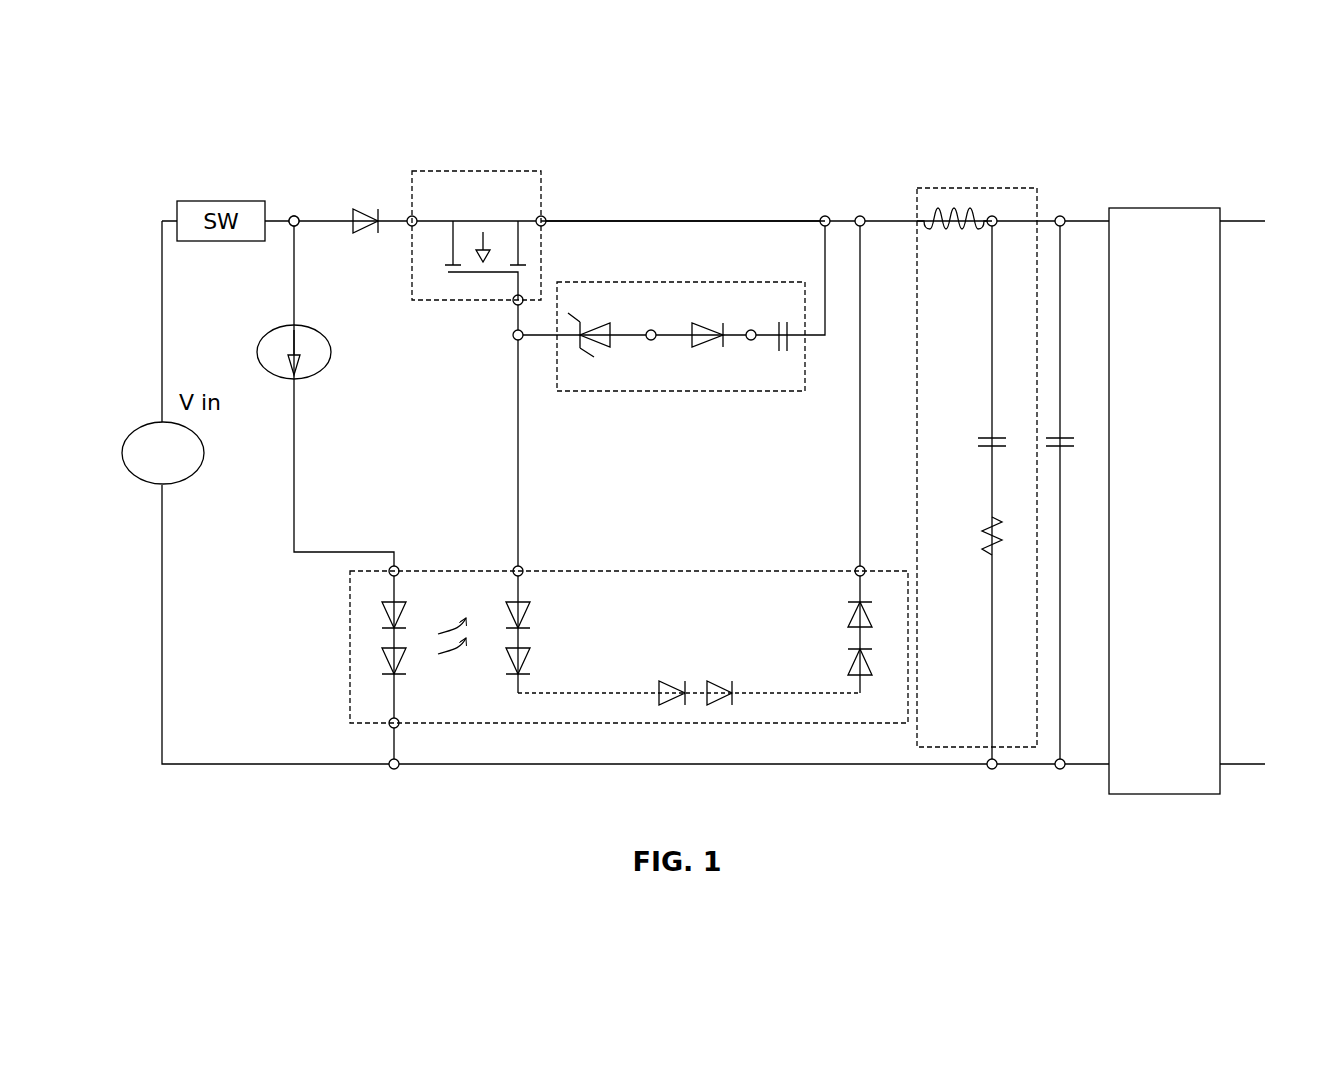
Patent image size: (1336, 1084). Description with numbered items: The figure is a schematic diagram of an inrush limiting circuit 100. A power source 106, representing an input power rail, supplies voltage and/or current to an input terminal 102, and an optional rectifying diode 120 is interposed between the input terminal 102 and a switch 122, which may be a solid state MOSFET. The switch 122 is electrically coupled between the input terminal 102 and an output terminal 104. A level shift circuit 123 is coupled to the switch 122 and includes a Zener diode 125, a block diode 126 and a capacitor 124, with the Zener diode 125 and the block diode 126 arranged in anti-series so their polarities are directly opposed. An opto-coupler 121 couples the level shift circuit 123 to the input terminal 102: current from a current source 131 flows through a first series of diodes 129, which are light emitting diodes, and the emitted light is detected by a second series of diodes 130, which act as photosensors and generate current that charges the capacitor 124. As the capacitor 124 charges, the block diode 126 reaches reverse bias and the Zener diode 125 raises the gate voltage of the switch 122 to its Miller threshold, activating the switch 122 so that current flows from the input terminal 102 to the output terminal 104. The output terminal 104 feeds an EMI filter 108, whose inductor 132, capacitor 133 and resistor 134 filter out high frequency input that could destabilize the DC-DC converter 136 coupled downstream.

The inrush limiting circuit 100 is at (992, 808).
The input terminal 102 is at (292, 214).
The output terminal 104 is at (667, 219).
The power source 106 is at (144, 486).
The EMI filter 108 is at (981, 183).
The rectifying diode 120 is at (369, 204).
The opto-coupler 121 is at (645, 567).
The switch 122 is at (474, 168).
The level shift circuit 123 is at (705, 292).
The capacitor 124 is at (785, 316).
The Zener diode 125 is at (553, 363).
The block diode 126 is at (713, 380).
The first series of diodes 129 is at (368, 632).
The second series of diodes 130 is at (507, 590).
The current source 131 is at (279, 326).
The inductor 132 is at (943, 206).
The capacitor 133 is at (978, 434).
The resistor 134 is at (980, 517).
The DC-DC converter 136 is at (1237, 420).